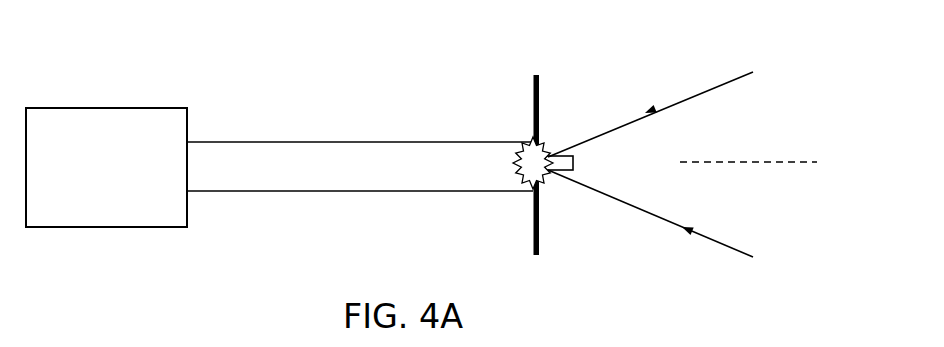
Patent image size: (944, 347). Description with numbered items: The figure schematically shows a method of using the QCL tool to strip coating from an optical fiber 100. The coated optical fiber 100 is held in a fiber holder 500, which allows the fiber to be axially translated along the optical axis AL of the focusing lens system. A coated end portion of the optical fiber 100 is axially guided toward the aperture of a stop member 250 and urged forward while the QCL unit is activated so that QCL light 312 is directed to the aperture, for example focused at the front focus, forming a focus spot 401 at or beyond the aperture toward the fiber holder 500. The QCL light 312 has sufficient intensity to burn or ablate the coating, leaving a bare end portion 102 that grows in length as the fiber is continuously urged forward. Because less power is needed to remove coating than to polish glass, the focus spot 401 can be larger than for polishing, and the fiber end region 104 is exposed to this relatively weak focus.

The fiber holder 500 is at (125, 180).
The optical fiber 100 is at (251, 100).
The stop member 250 is at (541, 86).
The QCL light 312 is at (728, 82).
The optical element at beam focus 104 is at (574, 163).
The focus spot 401 is at (541, 182).
The bare end portion 102 is at (555, 153).
The optical axis AL is at (730, 162).